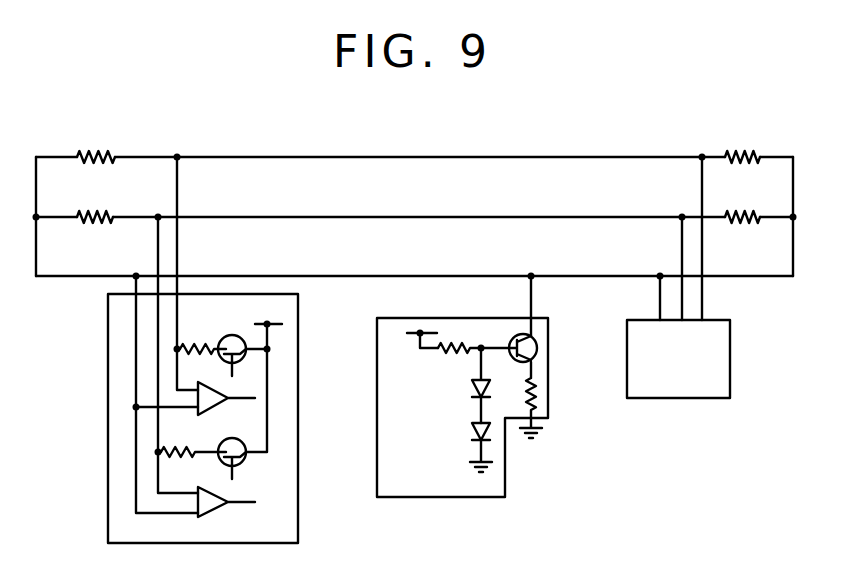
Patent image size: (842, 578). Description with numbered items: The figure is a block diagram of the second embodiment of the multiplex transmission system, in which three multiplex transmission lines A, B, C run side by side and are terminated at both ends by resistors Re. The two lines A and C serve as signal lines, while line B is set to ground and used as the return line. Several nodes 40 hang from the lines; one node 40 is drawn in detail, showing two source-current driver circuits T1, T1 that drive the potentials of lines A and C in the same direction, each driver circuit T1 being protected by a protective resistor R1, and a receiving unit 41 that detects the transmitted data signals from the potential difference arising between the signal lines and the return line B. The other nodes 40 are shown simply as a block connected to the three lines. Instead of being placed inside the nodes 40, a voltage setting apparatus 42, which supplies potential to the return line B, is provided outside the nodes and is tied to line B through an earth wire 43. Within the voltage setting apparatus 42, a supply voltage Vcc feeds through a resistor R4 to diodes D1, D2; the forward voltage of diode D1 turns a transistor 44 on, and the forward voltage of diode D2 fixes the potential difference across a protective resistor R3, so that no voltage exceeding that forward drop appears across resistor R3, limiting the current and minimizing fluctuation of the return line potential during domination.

The node 40 is at (298, 525).
The receiving unit 41 is at (218, 411).
The voltage setting apparatus 42 is at (478, 497).
The earth wire 43 is at (531, 294).
The transistor 44 is at (540, 340).
The multiplex transmission line A is at (496, 156).
The multiplex transmission line B is at (496, 216).
The multiplex transmission line C is at (496, 275).
The terminating resistor Re is at (418, 173).
The protective resistor R1 is at (188, 387).
The driver circuit T1 is at (241, 395).
The supply voltage Vcc is at (416, 353).
The resistor R4 is at (473, 361).
The protective resistor R3 is at (518, 400).
The diode D1 is at (463, 385).
The diode D2 is at (464, 447).